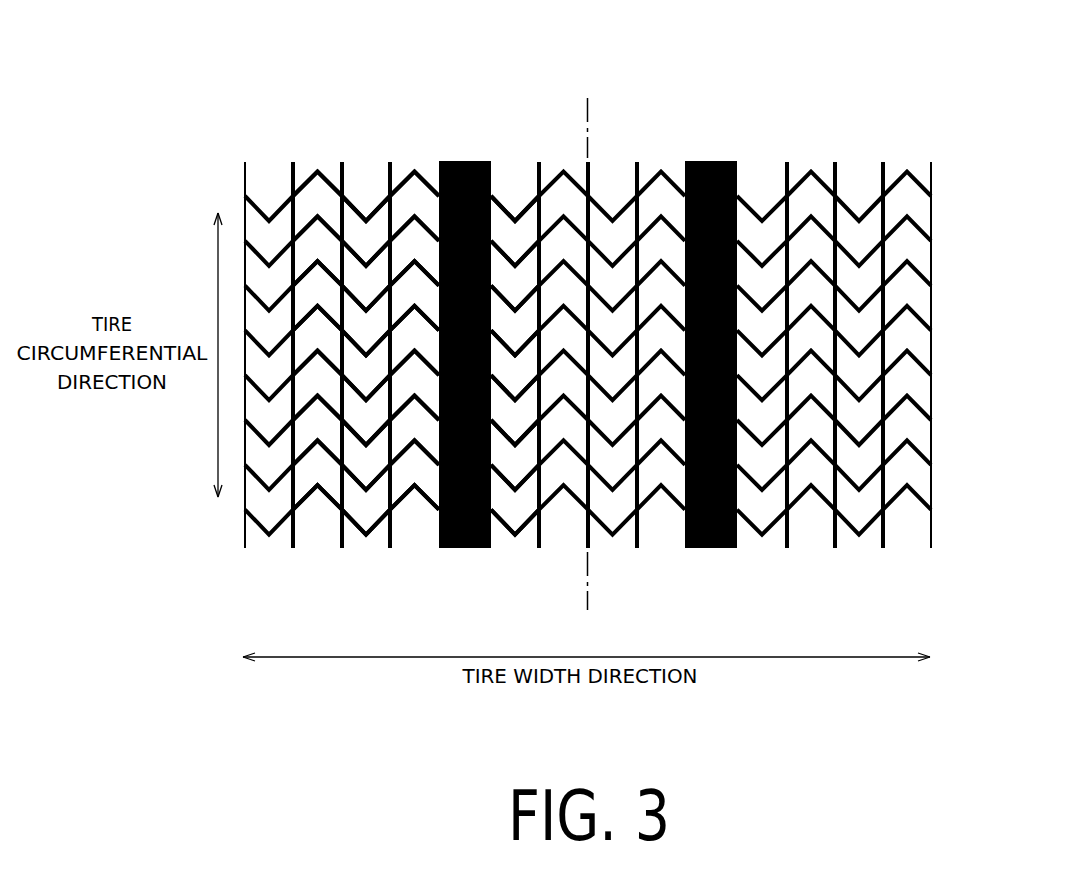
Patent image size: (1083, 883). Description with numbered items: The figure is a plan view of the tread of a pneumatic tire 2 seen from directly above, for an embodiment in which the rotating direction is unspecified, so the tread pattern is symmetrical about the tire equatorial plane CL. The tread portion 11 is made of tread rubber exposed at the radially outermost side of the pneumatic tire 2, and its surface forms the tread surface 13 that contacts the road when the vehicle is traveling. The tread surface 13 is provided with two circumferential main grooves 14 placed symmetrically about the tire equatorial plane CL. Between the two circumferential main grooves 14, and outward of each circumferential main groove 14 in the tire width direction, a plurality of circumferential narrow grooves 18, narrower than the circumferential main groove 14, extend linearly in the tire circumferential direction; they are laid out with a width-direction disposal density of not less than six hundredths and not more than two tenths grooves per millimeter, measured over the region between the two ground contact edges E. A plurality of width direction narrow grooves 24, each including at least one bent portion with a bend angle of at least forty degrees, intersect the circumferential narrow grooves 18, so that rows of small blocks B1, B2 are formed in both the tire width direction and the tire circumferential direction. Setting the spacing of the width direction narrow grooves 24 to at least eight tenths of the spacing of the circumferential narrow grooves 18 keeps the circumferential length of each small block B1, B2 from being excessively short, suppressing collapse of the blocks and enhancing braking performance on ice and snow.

The pneumatic tire 2 is at (301, 128).
The tread portion 11 is at (399, 127).
The tread surface 13 is at (518, 180).
The circumferential main groove 14 is at (465, 548).
The circumferential narrow groove 18 is at (345, 481).
The width direction narrow groove 24 is at (357, 468).
The ground contact edge E is at (245, 137).
The small block B1 is at (323, 188).
The small block B2 is at (364, 228).
The tire equatorial plane CL is at (587, 342).